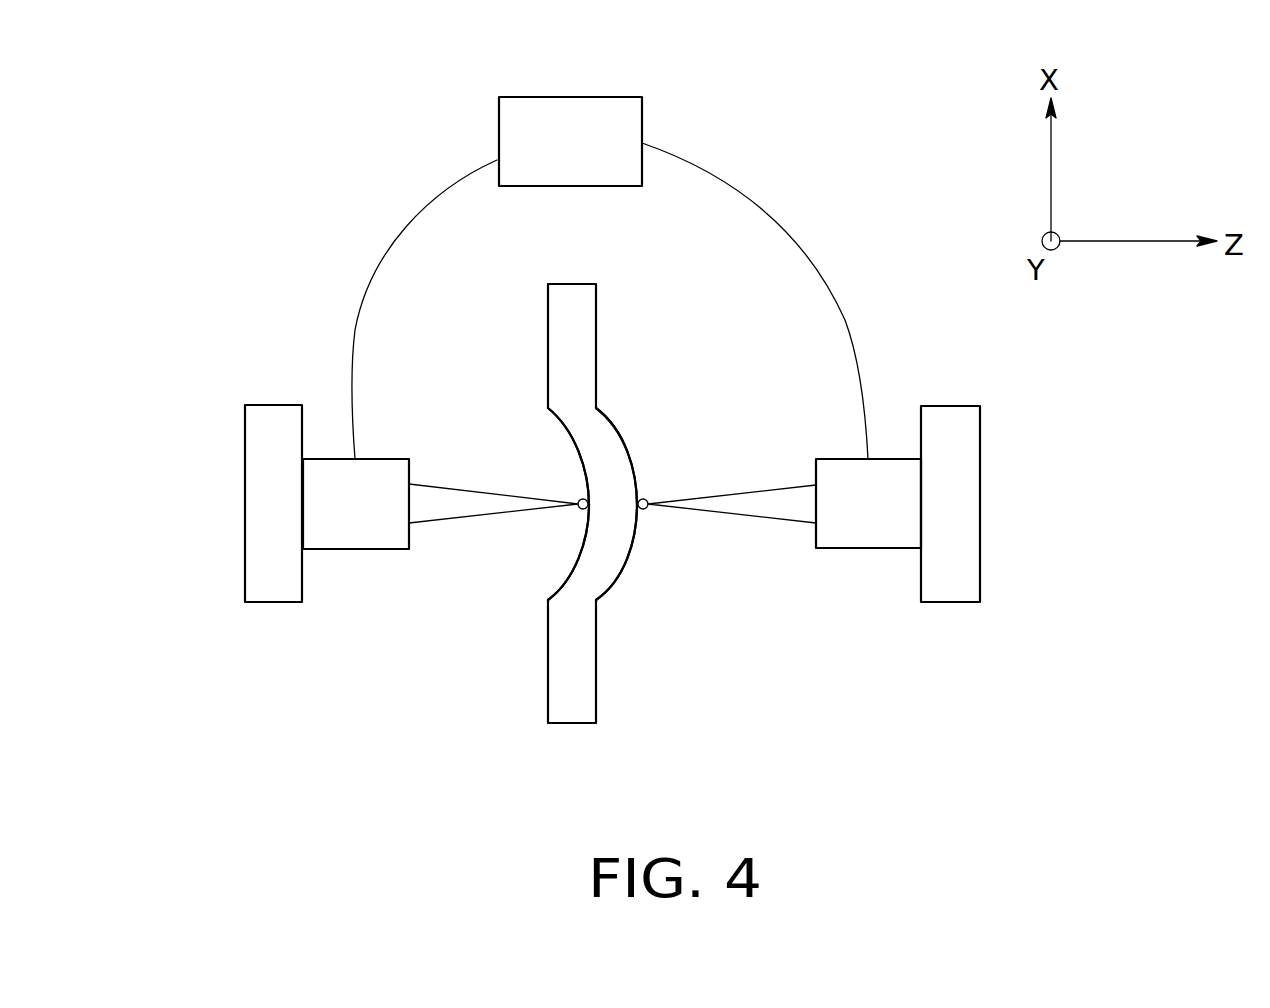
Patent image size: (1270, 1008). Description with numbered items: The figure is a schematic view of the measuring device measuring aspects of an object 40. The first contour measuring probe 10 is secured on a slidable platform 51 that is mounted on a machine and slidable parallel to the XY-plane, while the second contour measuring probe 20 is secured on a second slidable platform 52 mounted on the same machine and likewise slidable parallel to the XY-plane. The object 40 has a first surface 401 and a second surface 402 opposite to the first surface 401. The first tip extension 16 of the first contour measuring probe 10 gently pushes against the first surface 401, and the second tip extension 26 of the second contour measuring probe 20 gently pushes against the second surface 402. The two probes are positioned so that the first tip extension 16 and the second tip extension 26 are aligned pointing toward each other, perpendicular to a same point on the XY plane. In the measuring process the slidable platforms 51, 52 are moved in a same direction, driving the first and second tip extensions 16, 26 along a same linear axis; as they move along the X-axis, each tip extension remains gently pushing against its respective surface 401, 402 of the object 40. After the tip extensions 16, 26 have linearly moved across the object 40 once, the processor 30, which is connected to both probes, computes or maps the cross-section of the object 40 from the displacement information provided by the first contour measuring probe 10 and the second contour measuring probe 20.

The first contour measuring probe 10 is at (355, 549).
The first tip extension 16 is at (472, 507).
The second contour measuring probe 20 is at (868, 549).
The second tip extension 26 is at (728, 503).
The processor 30 is at (576, 118).
The object 40 is at (572, 723).
The first surface 401 is at (548, 660).
The second surface 402 is at (596, 647).
The slidable platform 51 is at (263, 505).
The slidable platform 52 is at (967, 505).